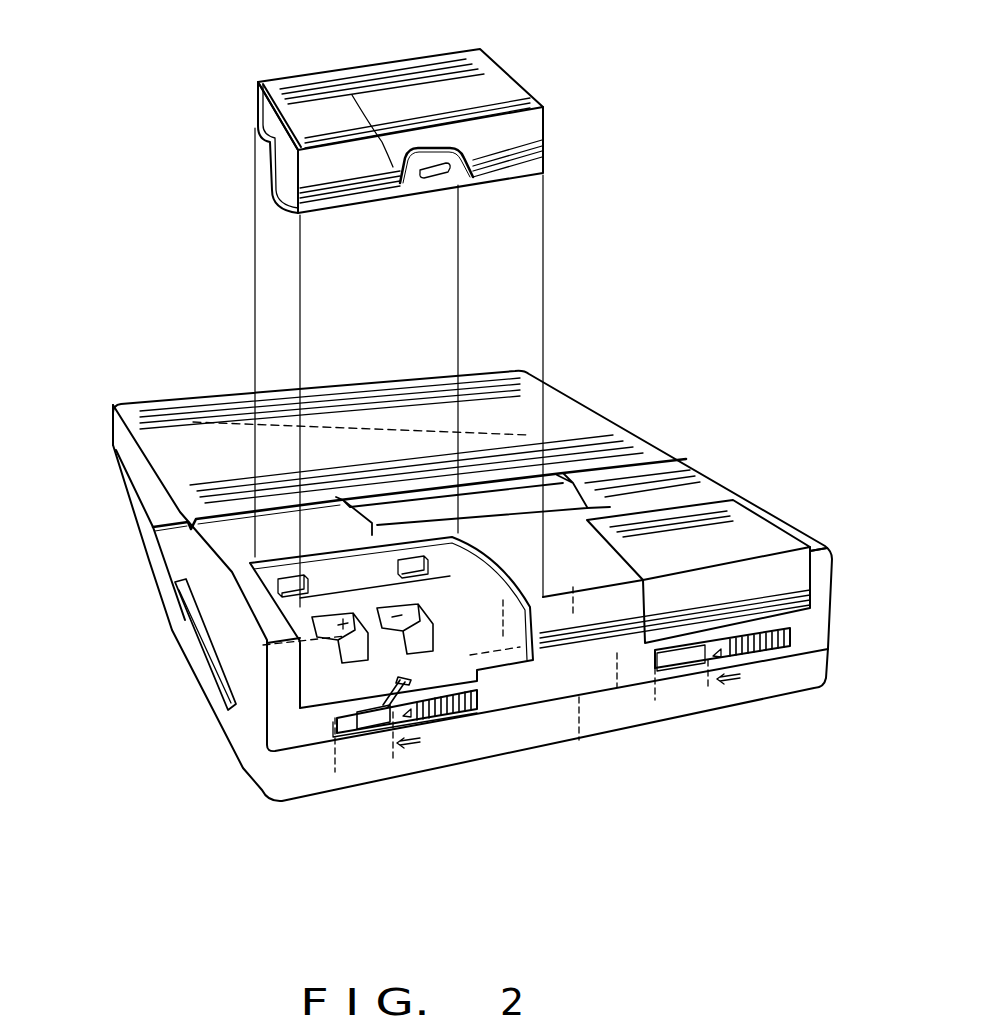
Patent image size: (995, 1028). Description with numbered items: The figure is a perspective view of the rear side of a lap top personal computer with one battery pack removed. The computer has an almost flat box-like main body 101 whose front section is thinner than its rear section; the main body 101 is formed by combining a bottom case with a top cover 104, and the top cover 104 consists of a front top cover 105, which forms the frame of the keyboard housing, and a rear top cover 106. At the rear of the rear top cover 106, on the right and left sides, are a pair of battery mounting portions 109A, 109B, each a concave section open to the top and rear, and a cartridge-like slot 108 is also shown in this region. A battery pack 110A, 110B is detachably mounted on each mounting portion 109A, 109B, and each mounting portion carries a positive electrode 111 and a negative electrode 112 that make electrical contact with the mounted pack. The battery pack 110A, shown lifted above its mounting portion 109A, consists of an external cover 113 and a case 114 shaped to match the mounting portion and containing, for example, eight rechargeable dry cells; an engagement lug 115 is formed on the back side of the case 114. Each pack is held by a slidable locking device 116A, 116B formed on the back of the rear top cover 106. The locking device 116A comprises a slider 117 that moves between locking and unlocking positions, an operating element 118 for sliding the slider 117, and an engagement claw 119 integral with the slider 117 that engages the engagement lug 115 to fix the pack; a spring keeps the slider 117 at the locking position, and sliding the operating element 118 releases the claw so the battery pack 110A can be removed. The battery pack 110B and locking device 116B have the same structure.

The main body 101 is at (130, 558).
The top cover 104 is at (183, 558).
The front top cover 105 is at (115, 480).
The rear top cover 106 is at (213, 617).
The cartridge insertion slot 108 is at (170, 477).
The battery mounting portion 109A is at (308, 676).
The battery mounting portion 109B is at (777, 577).
The battery pack 110A is at (500, 78).
The battery pack 110B is at (762, 532).
The positive electrode 111 is at (352, 648).
The negative electrode 112 is at (417, 637).
The external cover 113 is at (273, 87).
The case 114 is at (260, 110).
The engagement lug 115 is at (428, 180).
The locking device 116A is at (497, 692).
The locking device 116B is at (796, 650).
The slider 117 is at (377, 713).
The operating element 118 is at (453, 707).
The engagement claw 119 is at (404, 676).